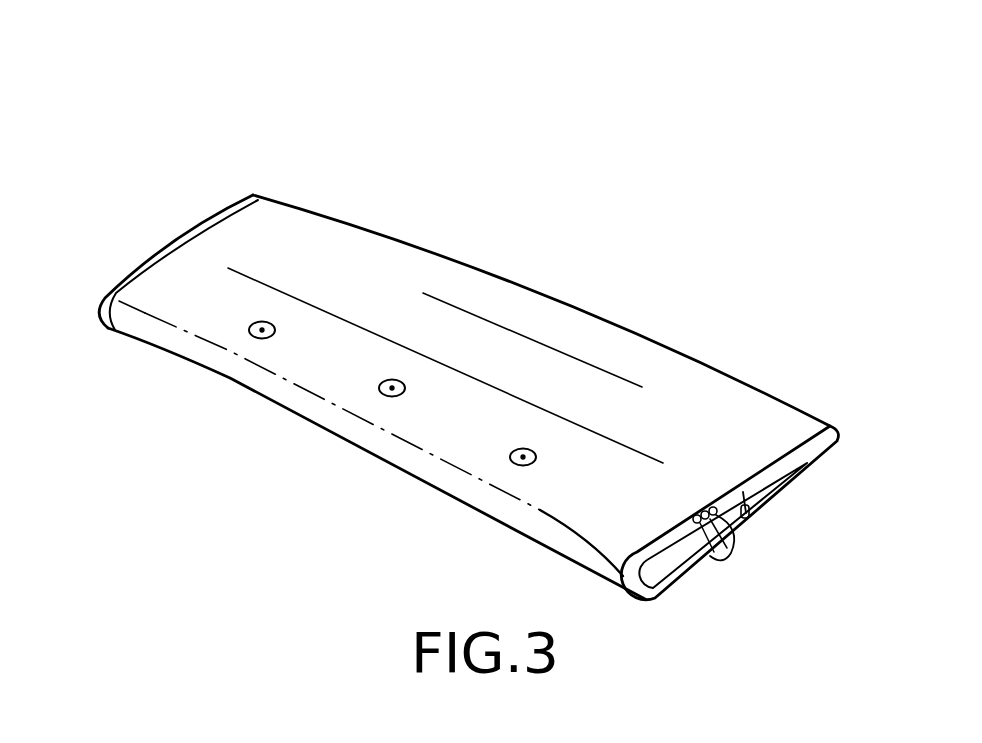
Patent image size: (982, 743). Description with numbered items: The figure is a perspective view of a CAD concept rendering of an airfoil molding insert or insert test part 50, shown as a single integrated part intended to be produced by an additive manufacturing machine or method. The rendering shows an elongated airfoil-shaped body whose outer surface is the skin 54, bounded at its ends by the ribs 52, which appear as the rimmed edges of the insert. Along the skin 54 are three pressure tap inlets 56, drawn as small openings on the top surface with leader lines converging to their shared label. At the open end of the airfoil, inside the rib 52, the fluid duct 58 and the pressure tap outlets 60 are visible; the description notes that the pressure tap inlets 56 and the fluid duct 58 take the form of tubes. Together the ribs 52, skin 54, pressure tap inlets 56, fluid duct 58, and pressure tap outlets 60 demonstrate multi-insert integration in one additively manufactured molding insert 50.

The airfoil molding insert 50 is at (467, 349).
The ribs 52 is at (113, 291).
The skin 54 is at (558, 318).
The pressure tap inlets 56 is at (520, 458).
The fluid duct 58 is at (750, 518).
The pressure tap outlets 60 is at (704, 525).